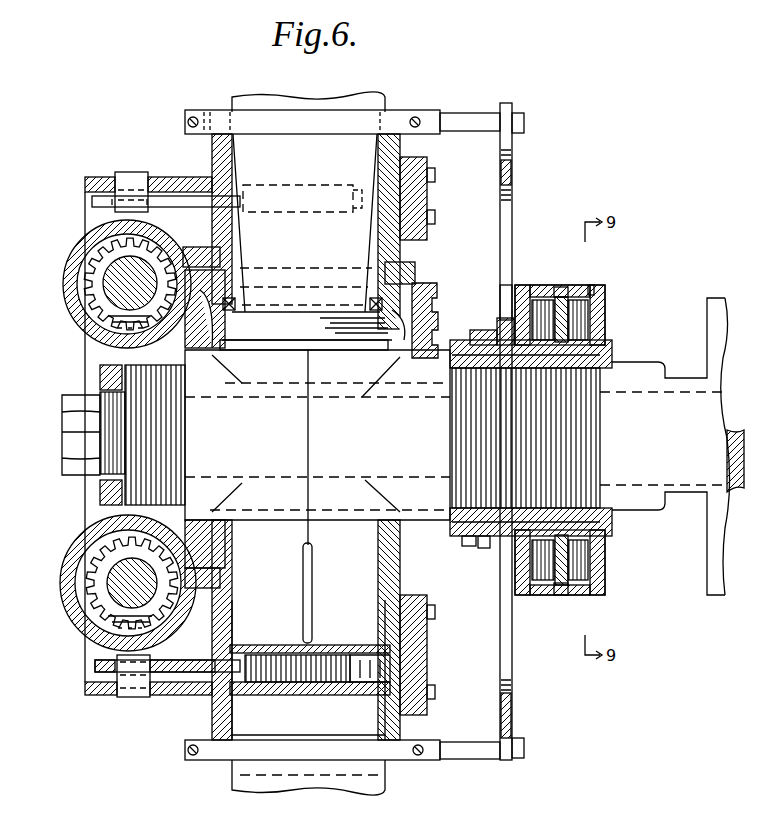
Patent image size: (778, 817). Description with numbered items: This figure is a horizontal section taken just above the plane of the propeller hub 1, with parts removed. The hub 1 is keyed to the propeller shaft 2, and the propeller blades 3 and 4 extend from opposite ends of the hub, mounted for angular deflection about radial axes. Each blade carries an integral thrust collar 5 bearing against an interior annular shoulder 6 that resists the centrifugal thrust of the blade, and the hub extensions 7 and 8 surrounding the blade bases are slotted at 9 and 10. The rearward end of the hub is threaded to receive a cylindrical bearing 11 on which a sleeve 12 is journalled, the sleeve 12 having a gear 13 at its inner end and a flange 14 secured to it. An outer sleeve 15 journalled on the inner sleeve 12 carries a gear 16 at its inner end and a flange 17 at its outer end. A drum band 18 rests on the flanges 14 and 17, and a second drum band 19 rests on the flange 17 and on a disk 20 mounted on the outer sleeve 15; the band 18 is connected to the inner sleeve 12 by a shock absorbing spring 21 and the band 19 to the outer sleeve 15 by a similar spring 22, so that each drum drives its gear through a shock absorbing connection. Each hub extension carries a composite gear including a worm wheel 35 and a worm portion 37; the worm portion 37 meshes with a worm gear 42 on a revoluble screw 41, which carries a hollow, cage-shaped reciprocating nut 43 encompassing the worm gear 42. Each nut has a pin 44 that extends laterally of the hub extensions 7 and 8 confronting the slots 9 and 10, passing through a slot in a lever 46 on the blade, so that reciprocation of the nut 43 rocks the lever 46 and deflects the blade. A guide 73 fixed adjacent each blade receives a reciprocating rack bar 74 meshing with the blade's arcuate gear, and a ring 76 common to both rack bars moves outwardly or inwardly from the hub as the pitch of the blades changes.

The hub 1 is at (288, 375).
The propeller shaft 2 is at (728, 392).
The propeller blade 3 is at (307, 148).
The propeller blade 4 is at (372, 779).
The thrust collar 5 is at (422, 312).
The interior annular shoulder 6 is at (238, 300).
The hub extension 7 is at (212, 152).
The hub extension 8 is at (212, 722).
The slot 9 is at (200, 178).
The slot 10 is at (200, 694).
The cylindrical bearing 11 is at (605, 362).
The sleeve 12 is at (482, 548).
The gear 13 is at (470, 548).
The flange 14 is at (605, 306).
The outer sleeve 15 is at (492, 338).
The gear 16 is at (500, 330).
The flange 17 is at (562, 298).
The drum band 18 is at (592, 285).
The drum band 19 is at (540, 298).
The disk 20 is at (504, 302).
The shock absorbing spring 21 is at (578, 298).
The shock absorbing spring 22 is at (548, 290).
The worm wheel 35 is at (216, 372).
The worm portion 37 is at (198, 254).
The revoluble screw 41 is at (110, 283).
The worm gear 42 is at (90, 262).
The reciprocating nut 43 is at (78, 333).
The pin 44 is at (128, 172).
The lever 46 is at (92, 201).
The guide 73 is at (214, 120).
The rack bar 74 is at (470, 122).
The ring 76 is at (503, 648).